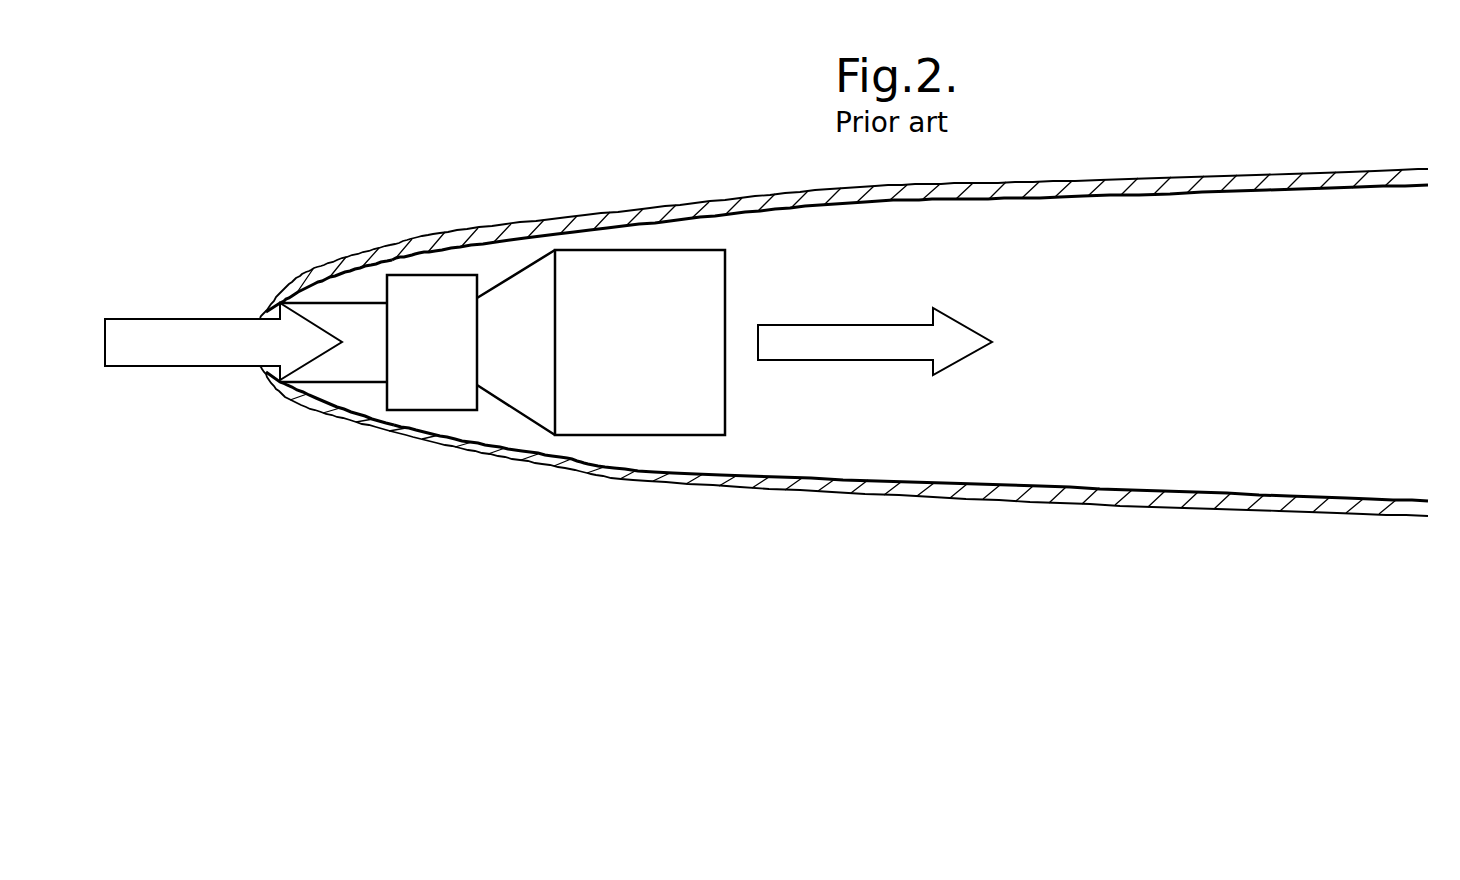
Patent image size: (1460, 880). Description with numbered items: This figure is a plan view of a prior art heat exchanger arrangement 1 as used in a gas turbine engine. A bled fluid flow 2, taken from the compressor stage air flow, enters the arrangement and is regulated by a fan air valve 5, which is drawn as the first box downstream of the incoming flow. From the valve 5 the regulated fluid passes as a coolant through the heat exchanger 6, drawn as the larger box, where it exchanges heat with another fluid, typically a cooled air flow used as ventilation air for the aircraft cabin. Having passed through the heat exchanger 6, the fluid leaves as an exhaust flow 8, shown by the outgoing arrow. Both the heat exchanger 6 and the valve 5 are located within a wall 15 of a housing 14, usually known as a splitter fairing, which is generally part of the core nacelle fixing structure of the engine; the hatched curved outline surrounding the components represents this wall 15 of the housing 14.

The heat exchanger arrangement 1 is at (641, 180).
The fluid flow 2 is at (190, 353).
The fan air valve 5 is at (433, 318).
The heat exchanger 6 is at (700, 258).
The exhaust flow 8 is at (958, 362).
The housing 14 is at (1352, 165).
The wall 15 is at (323, 270).